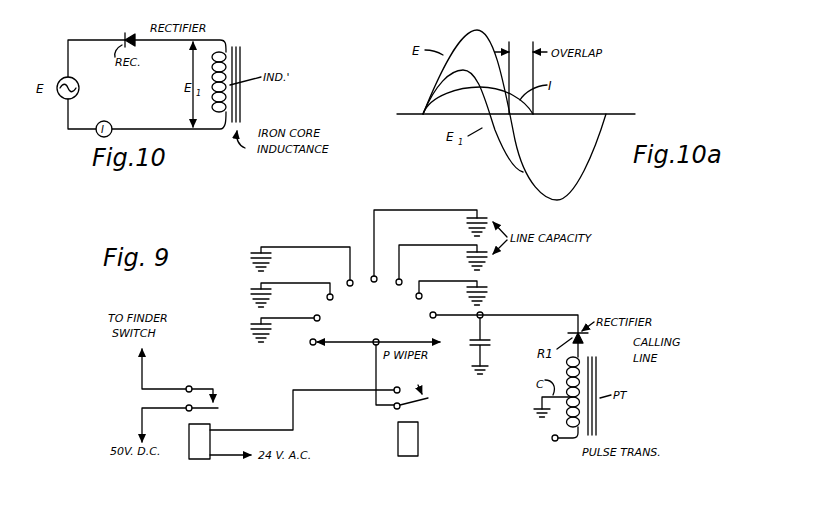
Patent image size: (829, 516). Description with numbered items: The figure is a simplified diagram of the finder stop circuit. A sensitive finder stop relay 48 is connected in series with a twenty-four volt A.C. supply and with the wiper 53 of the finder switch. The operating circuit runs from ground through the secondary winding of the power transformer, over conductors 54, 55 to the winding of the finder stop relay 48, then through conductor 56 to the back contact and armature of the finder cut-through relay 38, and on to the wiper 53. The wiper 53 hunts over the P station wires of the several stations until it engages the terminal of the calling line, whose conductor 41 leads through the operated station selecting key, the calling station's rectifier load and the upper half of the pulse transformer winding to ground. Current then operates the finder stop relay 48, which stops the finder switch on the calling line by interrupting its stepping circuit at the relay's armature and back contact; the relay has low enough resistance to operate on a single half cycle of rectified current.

The conductor 41 is at (535, 314).
The wiper 53 is at (347, 344).
The conductor 56 is at (237, 430).
The finder stop relay 48 is at (189, 453).
The conductor 54 is at (238, 475).
The conductor 55 is at (228, 457).
The finder cut-through relay 38 is at (419, 453).